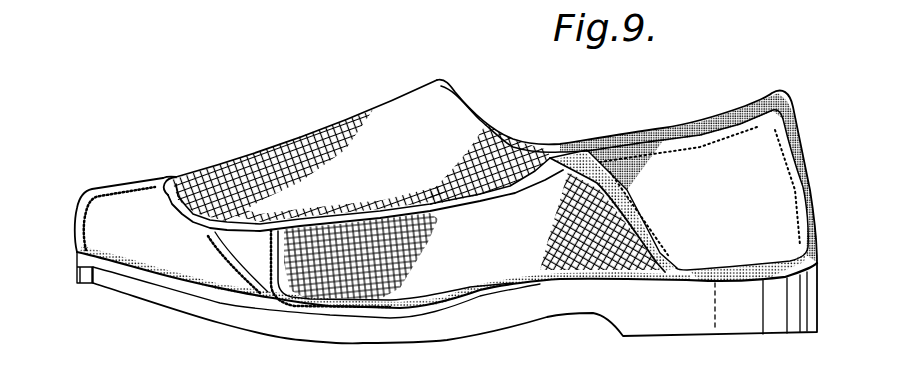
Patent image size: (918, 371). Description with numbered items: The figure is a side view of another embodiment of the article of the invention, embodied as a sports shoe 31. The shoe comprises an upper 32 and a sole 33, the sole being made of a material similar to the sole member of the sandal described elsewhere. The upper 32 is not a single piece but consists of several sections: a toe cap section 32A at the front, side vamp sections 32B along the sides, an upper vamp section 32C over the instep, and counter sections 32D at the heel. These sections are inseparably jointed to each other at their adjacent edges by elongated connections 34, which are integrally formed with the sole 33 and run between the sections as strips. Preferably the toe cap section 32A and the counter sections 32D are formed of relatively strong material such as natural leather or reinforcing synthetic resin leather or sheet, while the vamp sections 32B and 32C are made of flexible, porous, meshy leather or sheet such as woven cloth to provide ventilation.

The sports shoe 31 is at (812, 86).
The upper 32 is at (226, 160).
The toe cap section 32A is at (90, 212).
The side vamp sections 32B is at (538, 260).
The upper vamp section 32C is at (353, 124).
The counter sections 32D is at (777, 193).
The sole 33 is at (108, 291).
The elongated connections 34 is at (489, 190).